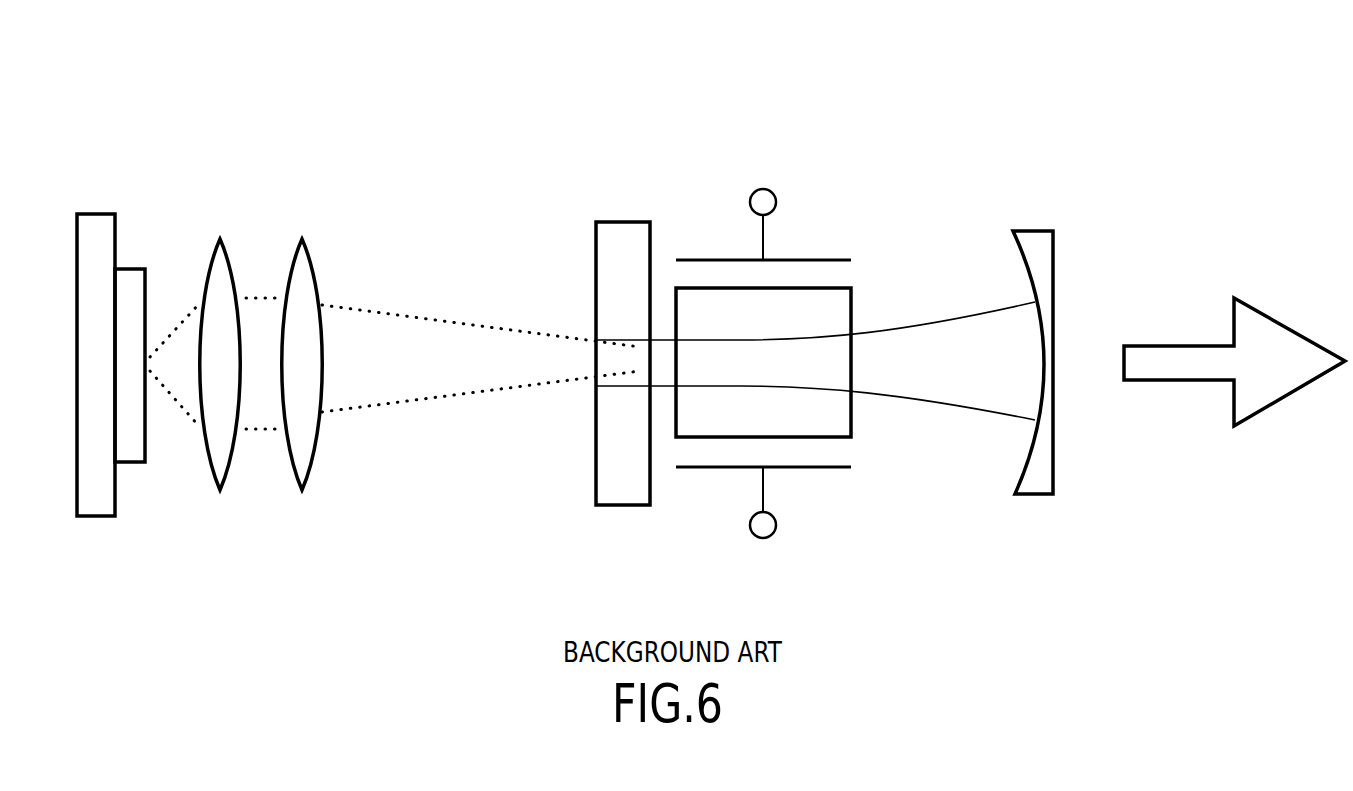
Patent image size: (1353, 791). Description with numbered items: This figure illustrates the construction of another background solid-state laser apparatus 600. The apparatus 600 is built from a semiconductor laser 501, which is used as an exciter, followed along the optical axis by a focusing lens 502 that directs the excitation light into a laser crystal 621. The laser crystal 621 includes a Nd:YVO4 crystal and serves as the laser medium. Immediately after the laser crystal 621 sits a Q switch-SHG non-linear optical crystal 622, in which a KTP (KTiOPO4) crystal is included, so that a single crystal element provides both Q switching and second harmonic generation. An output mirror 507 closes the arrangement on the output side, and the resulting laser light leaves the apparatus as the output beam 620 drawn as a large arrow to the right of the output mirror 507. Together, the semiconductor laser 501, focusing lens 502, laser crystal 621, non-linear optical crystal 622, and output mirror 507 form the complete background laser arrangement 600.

The solid-state laser apparatus 600 is at (266, 168).
The semiconductor laser 501 is at (104, 516).
The focusing lens 502 is at (259, 508).
The laser crystal 621 is at (622, 505).
The Q switch-SHG non-linear optical crystal 622 is at (825, 467).
The output mirror 507 is at (1037, 494).
The output laser beam 620 is at (1172, 380).